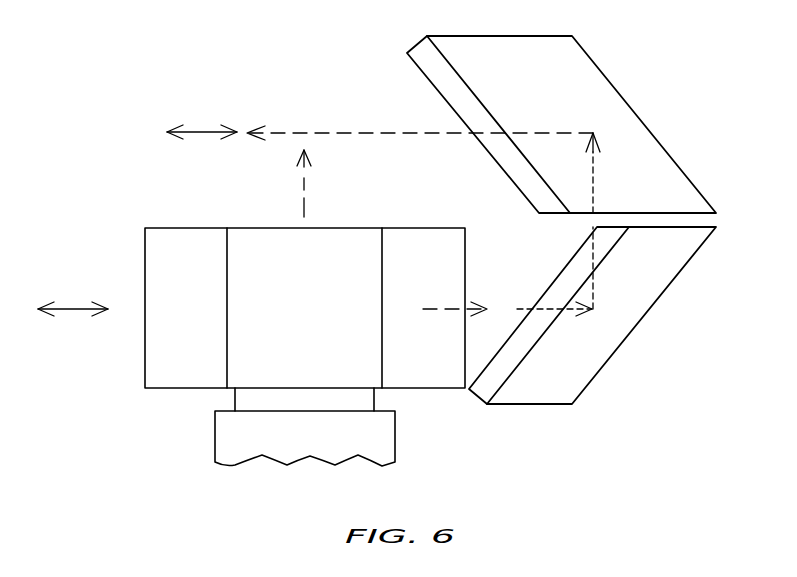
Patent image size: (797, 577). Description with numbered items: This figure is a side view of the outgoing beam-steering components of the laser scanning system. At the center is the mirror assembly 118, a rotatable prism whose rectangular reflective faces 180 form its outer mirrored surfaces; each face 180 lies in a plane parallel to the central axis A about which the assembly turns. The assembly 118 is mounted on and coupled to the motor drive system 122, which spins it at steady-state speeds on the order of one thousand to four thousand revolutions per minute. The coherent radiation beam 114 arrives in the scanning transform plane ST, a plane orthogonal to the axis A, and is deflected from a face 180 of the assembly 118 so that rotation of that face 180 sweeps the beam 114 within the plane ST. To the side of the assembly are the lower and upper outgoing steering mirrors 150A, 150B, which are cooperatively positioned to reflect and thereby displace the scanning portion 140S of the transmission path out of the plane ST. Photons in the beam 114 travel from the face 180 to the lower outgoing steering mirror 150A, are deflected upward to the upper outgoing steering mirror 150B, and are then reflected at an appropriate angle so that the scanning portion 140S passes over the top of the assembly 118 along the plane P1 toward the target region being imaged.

The mirror assembly 118 is at (177, 227).
The reflective faces 180 is at (203, 336).
The motor drive system 122 is at (215, 435).
The lower outgoing steering mirror 150A is at (643, 313).
The upper outgoing steering mirror 150B is at (645, 120).
The coherent radiation beam 114 is at (497, 308).
The scanning portion of the transmission path 140S is at (402, 132).
The plane P1 is at (204, 132).
The central axis A is at (303, 198).
The scanning transform plane ST is at (75, 308).